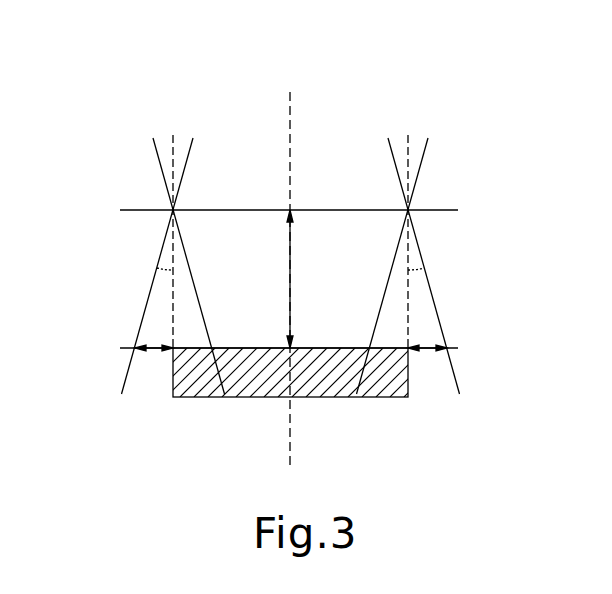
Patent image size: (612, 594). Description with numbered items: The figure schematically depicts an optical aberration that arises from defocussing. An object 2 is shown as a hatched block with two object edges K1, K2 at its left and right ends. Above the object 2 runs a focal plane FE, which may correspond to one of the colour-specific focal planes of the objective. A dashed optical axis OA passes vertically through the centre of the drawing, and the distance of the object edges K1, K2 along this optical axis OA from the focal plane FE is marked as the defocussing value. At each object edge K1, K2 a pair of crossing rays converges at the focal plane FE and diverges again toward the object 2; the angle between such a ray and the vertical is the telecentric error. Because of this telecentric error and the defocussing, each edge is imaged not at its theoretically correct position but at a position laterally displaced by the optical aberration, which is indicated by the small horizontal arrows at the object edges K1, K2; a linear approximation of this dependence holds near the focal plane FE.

The object 2 is at (332, 383).
The optical axis OA is at (292, 97).
The focal plane FE is at (440, 207).
The object edge K1 is at (172, 352).
The object edge K2 is at (388, 398).